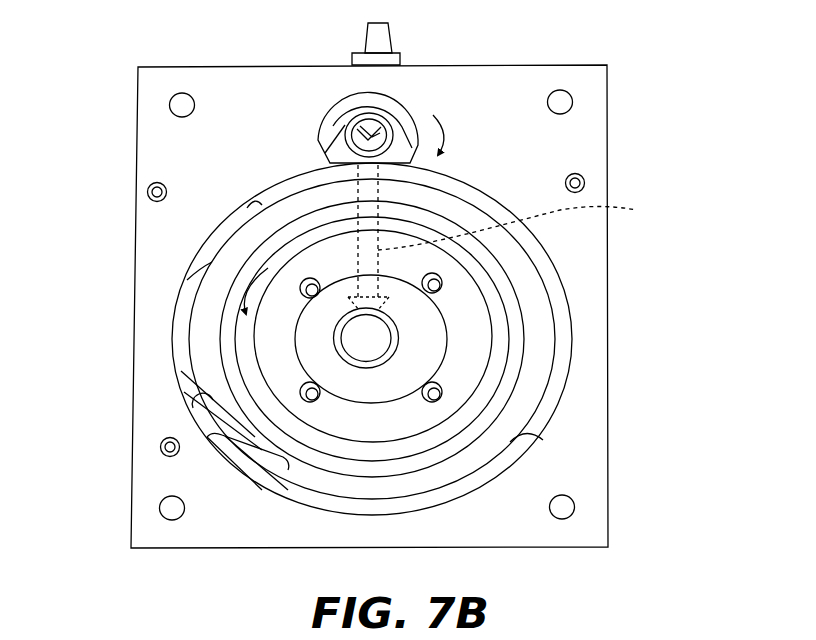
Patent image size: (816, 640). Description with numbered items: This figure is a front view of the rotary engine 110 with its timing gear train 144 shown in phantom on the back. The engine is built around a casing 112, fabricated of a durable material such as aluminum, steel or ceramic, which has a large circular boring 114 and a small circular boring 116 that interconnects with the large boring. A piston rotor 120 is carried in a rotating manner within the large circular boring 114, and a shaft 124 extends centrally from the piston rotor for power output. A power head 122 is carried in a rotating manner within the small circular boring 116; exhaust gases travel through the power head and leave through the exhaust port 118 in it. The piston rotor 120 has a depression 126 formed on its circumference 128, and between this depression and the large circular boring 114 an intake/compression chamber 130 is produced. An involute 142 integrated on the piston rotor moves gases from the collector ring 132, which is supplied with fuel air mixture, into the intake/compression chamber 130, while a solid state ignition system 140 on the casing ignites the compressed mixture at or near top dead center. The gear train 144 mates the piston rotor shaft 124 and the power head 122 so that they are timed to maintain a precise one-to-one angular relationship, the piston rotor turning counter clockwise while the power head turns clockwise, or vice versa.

The rotary engine 110 is at (678, 70).
The casing 112 is at (153, 232).
The large circular boring 114 is at (176, 362).
The small circular boring 116 is at (333, 130).
The exhaust port 118 is at (378, 114).
The piston rotor 120 is at (541, 327).
The power head 122 is at (412, 158).
The shaft 124 is at (382, 349).
The depression 126 is at (187, 280).
The circumference 128 is at (535, 418).
The intake/compression chamber 130 is at (258, 203).
The collector ring 132 is at (290, 460).
The solid state ignition system 140 is at (390, 33).
The involute 142 is at (195, 417).
The gear train 144 is at (525, 225).